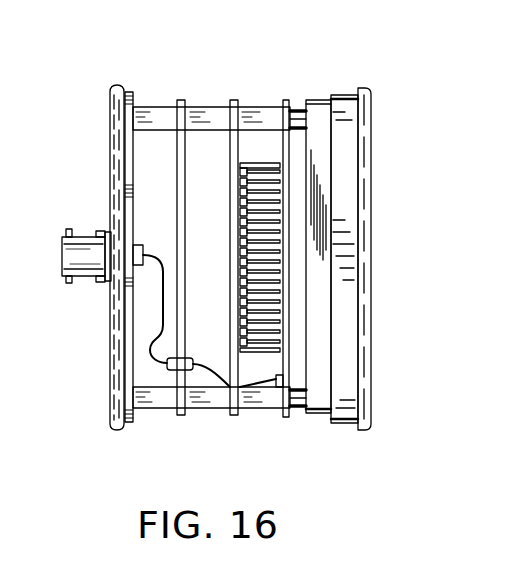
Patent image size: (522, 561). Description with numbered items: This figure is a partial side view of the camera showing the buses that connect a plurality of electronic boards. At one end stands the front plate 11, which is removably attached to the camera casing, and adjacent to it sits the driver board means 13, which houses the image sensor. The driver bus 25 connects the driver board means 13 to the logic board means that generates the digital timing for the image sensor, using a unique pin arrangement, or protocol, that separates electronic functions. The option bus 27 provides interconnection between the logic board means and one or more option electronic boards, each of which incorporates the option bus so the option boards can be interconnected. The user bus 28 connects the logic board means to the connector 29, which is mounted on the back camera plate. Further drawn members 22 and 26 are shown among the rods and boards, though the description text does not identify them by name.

The rim 11 is at (371, 97).
The housing plate 13 is at (319, 100).
The support rod 22 is at (286, 99).
The cross bar 25 is at (258, 107).
The guide rod 26 is at (223, 113).
The guide rod 27 is at (202, 100).
The cable 28 is at (150, 350).
The motor 29 is at (88, 238).